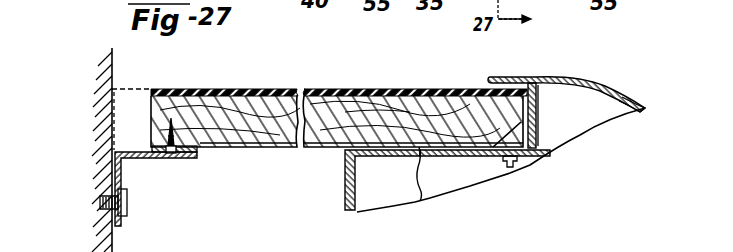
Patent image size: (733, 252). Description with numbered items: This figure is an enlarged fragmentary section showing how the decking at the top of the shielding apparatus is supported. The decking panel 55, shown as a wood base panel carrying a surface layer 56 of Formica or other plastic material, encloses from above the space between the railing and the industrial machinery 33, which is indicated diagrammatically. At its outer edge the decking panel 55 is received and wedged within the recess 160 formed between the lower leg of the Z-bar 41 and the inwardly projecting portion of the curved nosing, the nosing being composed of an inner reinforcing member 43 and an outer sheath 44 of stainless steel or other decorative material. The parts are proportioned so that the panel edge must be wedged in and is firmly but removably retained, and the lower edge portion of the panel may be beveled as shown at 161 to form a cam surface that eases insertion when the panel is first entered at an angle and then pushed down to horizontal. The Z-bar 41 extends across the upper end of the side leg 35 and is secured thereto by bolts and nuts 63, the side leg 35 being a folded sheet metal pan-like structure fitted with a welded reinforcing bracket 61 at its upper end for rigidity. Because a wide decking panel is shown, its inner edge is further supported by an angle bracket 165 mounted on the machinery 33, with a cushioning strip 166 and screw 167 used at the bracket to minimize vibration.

The industrial machinery 33 is at (109, 100).
The side leg 35 is at (431, 198).
The Z-bar 41 is at (536, 102).
The inner reinforcing member 43 is at (628, 104).
The outer sheath 44 is at (640, 102).
The decking panel 55 is at (316, 138).
The surface layer 56 is at (317, 89).
The reinforcing bracket 61 is at (357, 213).
The bolts and nuts 63 is at (510, 168).
The recess 160 is at (522, 127).
The beveled lower edge portion 161 is at (530, 159).
The angle bracket 165 is at (133, 161).
The cushioning strip 166 is at (192, 156).
The screw 167 is at (173, 161).